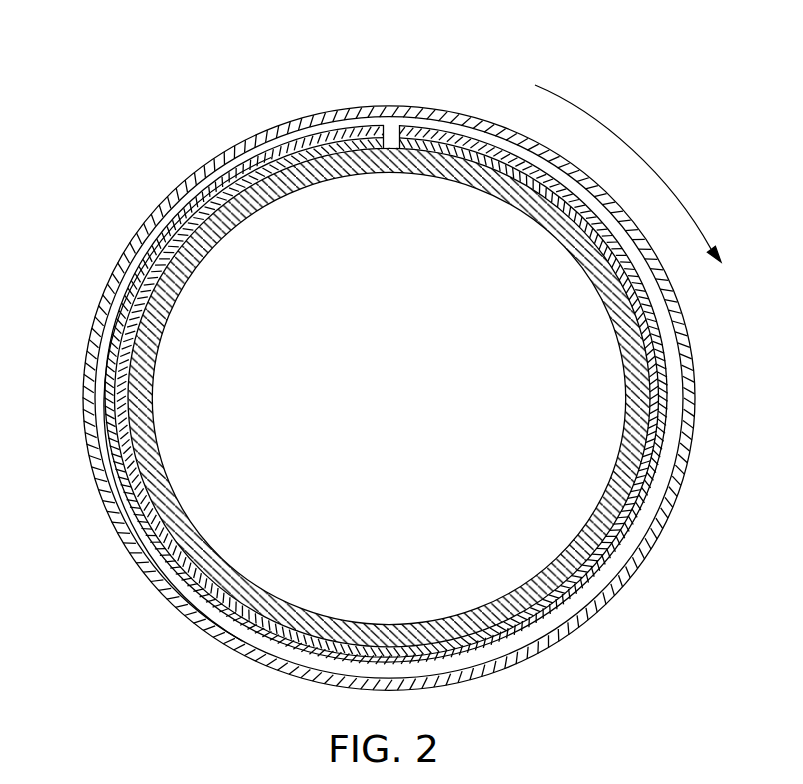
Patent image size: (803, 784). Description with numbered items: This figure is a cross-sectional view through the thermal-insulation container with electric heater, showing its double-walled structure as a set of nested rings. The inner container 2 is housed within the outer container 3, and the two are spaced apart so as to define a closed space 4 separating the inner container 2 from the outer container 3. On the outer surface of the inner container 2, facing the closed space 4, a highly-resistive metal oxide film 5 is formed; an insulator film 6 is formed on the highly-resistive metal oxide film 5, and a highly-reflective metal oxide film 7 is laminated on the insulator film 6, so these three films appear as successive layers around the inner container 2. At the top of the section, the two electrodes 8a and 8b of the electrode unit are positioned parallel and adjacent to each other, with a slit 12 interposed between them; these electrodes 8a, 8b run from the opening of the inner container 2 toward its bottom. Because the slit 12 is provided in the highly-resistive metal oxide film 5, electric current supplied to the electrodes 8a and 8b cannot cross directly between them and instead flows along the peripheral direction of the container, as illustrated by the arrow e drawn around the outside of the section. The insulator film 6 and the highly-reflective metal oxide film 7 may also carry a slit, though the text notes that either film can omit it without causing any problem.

The inner container 2 is at (250, 143).
The outer container 3 is at (153, 220).
The closed space 4 is at (100, 448).
The highly-resistive metal oxide film 5 is at (137, 347).
The insulator film 6 is at (120, 385).
The highly-reflective metal oxide film 7 is at (137, 283).
The electrode 8a is at (442, 138).
The electrode 8b is at (348, 135).
The slit 12 is at (390, 147).
The arrow e is at (628, 173).